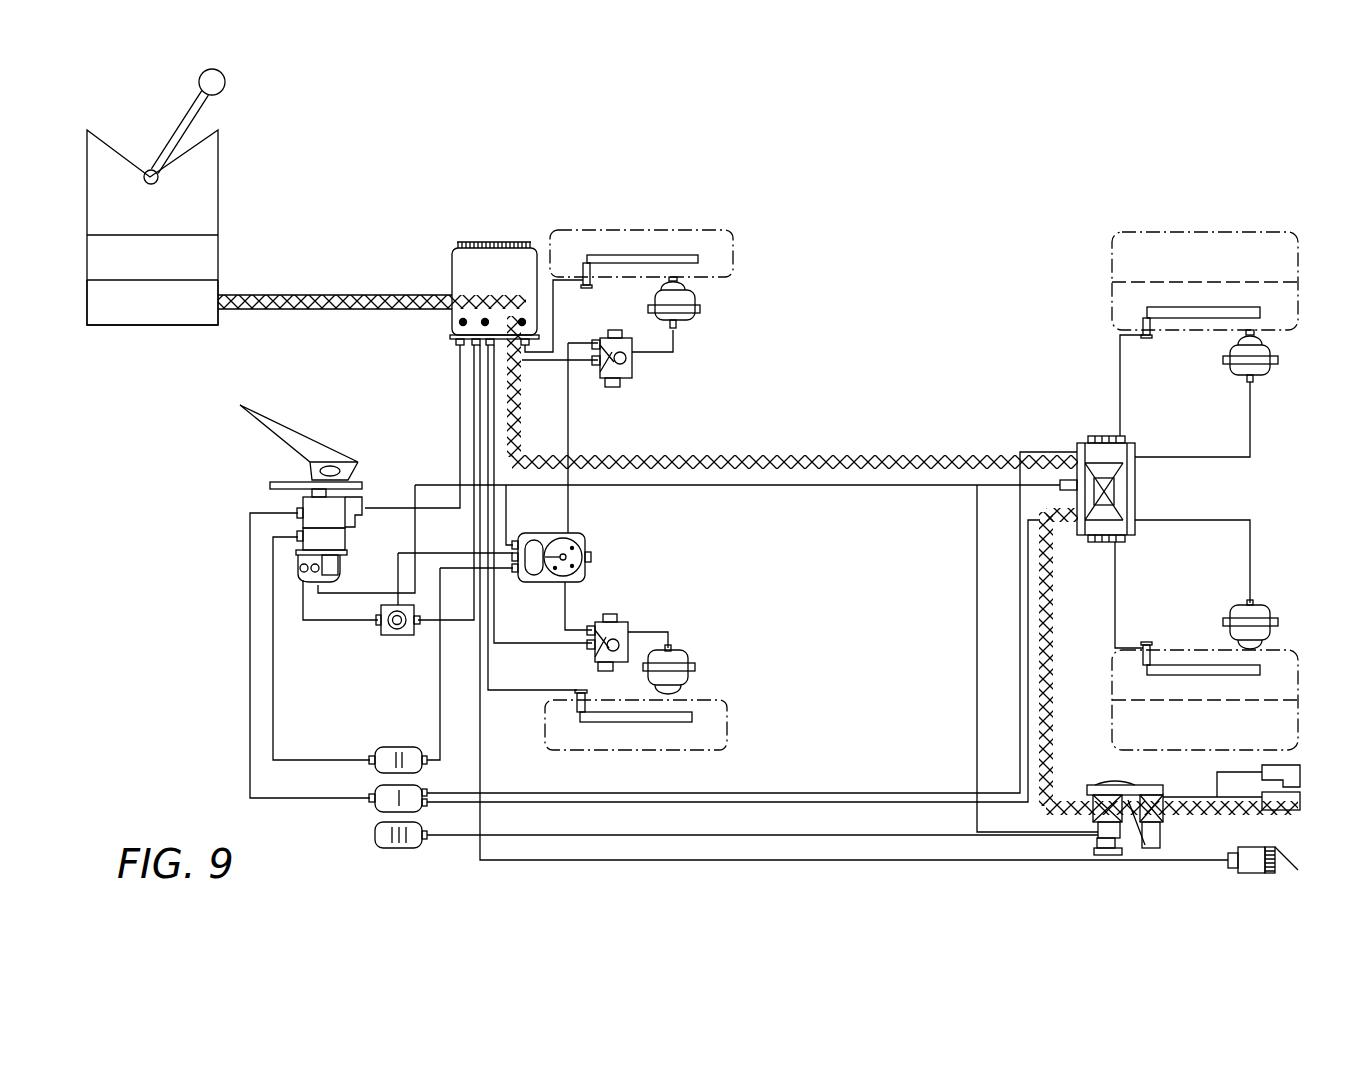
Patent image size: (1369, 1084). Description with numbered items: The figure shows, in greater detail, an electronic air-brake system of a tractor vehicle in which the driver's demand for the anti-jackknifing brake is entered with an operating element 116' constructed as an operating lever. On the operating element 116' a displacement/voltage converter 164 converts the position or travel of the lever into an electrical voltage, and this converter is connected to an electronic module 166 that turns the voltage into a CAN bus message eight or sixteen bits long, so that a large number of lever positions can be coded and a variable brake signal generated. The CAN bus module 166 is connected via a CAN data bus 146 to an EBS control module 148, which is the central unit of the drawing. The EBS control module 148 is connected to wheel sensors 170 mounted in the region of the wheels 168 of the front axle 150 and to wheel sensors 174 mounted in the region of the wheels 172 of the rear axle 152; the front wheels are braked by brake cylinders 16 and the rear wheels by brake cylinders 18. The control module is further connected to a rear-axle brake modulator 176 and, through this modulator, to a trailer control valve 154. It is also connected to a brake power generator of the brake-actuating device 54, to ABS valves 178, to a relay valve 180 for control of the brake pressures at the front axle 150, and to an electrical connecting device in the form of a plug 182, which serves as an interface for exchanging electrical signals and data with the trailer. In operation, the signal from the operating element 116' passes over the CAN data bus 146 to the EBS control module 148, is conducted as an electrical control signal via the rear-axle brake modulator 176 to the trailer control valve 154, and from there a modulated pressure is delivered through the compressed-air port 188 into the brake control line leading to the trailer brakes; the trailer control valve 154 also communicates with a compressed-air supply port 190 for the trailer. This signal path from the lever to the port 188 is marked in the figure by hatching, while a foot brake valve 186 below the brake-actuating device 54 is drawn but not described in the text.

The operating element 116' is at (204, 195).
The displacement/voltage converter 164 is at (214, 256).
The electronic module 166 is at (207, 293).
The CAN data bus 146 is at (375, 296).
The EBS control unit 148 is at (463, 262).
The wheels of front axle 168 is at (655, 228).
The wheel sensors 170 is at (588, 287).
The brake cylinders 16 is at (698, 315).
The rear-axle brake modulator 176 is at (628, 378).
The ABS valves 178 is at (613, 625).
The relay valve 180 is at (586, 557).
The brake-actuating device 54 is at (310, 430).
The foot brake valve 186 is at (336, 545).
The wheels of rear axle 172 is at (1300, 305).
The wheel sensors 174 is at (1147, 338).
The brake cylinders 18 is at (1265, 372).
The trailer control valve 154 is at (1110, 783).
The rear axle 152 is at (1152, 762).
The front axle 150 is at (640, 762).
The compressed-air supply port 190 is at (1298, 770).
The compressed-air port 188 is at (1298, 797).
The plug 182 is at (1252, 875).